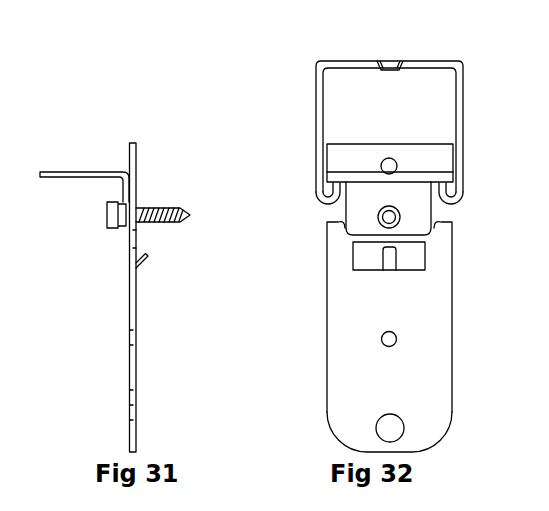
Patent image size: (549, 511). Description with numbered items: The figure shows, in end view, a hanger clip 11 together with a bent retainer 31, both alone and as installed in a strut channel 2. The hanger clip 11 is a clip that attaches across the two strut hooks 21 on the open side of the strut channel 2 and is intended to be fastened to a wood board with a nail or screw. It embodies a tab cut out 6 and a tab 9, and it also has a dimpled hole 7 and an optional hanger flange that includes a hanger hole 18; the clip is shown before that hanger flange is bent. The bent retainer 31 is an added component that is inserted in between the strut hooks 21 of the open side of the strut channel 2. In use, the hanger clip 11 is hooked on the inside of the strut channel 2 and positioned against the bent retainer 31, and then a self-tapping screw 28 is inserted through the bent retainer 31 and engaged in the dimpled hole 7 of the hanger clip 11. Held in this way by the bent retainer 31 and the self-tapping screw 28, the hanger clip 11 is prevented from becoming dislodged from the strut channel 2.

In FIG. 32, the strut channel 2 is at (347, 59).
In FIG. 32, the tab cut out 6 is at (419, 260).
In FIG. 32, the dimpled hole 7 is at (397, 341).
In FIG. 32, the tab 9 is at (388, 252).
In FIG. 31, the hanger clip 11 is at (130, 382).
In FIG. 32, the hanger clip 11 is at (453, 388).
In FIG. 32, the hanger hole 18 is at (378, 427).
In FIG. 32, the strut hook 21 is at (330, 200).
In FIG. 31, the self-tapping screw 28 is at (155, 208).
In FIG. 31, the bent retainer 31 is at (85, 170).
In FIG. 32, the bent retainer 31 is at (413, 189).